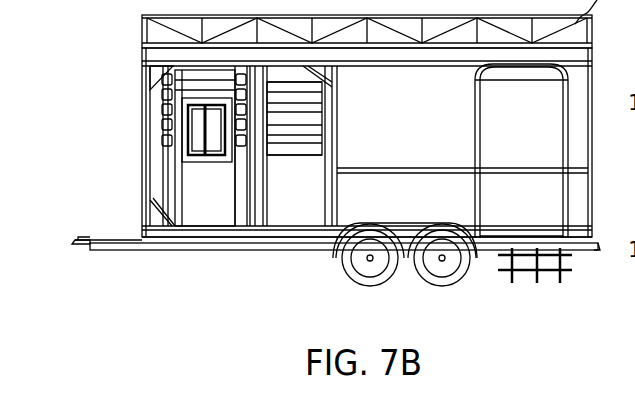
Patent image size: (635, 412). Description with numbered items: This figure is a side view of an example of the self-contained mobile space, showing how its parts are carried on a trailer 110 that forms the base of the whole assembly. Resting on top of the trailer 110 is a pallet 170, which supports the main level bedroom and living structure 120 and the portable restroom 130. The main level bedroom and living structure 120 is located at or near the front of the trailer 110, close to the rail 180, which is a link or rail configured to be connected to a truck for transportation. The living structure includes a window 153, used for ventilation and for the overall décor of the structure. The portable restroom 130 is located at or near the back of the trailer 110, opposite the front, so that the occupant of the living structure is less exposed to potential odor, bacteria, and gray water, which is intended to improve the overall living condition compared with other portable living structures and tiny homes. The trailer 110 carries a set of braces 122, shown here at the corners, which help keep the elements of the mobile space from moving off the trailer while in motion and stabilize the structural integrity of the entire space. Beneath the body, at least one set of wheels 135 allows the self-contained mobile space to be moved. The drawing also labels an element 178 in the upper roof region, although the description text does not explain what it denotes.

The trailer 110 is at (120, 254).
The main level bedroom and living structure 120 is at (333, 142).
The braces 122 is at (144, 76).
The portable restroom 130 is at (476, 101).
The set of wheels 135 is at (468, 278).
The window 153 is at (188, 125).
The pallet 170 is at (257, 246).
The roof truss 178 is at (577, 36).
The rail 180 is at (76, 238).